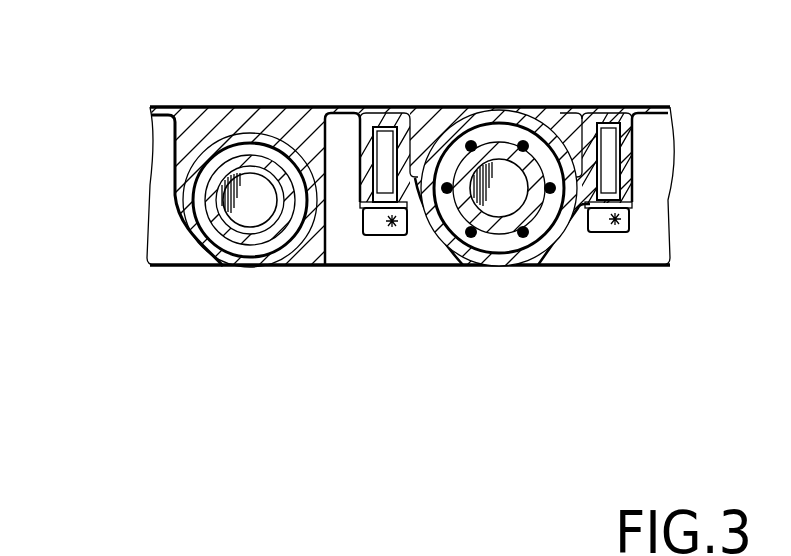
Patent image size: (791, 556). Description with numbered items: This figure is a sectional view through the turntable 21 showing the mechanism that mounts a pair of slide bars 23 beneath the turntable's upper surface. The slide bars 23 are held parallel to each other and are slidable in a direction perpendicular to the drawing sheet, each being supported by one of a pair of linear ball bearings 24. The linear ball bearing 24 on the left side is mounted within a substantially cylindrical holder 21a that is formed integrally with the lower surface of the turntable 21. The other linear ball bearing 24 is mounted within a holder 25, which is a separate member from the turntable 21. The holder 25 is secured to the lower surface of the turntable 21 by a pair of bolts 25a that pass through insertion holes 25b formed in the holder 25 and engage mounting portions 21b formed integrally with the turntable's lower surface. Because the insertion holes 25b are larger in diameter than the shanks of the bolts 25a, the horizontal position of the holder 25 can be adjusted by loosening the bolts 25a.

The turntable 21 is at (303, 106).
The cylindrical holder 21a is at (173, 218).
The mounting portions 21b is at (418, 118).
The slide bars 23 is at (248, 233).
The linear ball bearings 24 is at (213, 226).
The holder 25 is at (553, 257).
The bolts 25a is at (385, 235).
The insertion holes 25b is at (372, 108).